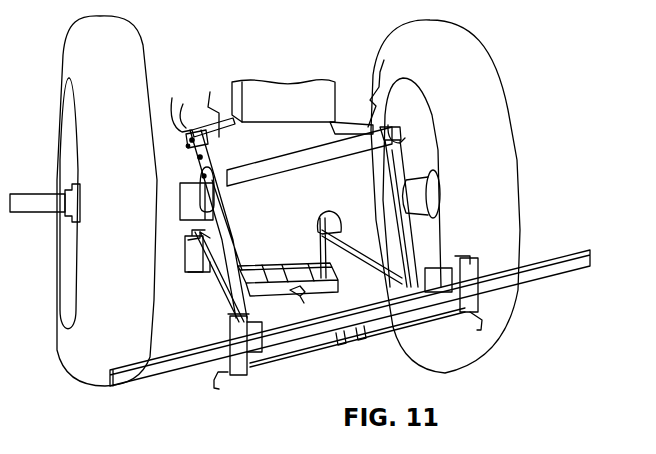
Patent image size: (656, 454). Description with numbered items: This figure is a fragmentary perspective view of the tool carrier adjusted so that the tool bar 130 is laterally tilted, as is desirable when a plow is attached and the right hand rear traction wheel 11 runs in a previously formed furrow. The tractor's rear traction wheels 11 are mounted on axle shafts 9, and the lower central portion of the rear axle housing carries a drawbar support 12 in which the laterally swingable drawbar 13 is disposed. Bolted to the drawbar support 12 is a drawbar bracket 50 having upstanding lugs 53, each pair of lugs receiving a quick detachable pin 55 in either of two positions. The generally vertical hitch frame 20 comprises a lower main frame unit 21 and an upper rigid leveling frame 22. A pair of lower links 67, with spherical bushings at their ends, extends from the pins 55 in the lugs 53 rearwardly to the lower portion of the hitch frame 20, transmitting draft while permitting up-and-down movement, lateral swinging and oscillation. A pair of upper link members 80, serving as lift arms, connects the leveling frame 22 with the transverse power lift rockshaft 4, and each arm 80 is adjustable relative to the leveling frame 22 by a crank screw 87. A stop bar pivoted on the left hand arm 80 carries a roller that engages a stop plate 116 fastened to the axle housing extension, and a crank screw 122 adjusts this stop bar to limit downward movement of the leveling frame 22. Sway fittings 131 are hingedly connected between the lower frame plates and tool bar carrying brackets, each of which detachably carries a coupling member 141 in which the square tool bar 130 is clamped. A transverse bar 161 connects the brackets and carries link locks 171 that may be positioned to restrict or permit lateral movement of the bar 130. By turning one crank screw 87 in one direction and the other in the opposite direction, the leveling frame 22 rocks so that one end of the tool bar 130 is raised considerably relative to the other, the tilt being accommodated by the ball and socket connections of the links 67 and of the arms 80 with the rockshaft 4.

The power lift rockshaft 4 is at (188, 141).
The axle shaft 9 is at (27, 201).
The rear traction wheel 11 is at (75, 57).
The drawbar support 12 is at (322, 296).
The drawbar 13 is at (296, 300).
The hitch frame 20 is at (424, 235).
The lower main frame unit 21 is at (412, 182).
The leveling frame 22 is at (304, 150).
The drawbar bracket 50 is at (190, 280).
The upstanding lug 53 is at (192, 234).
The quick detachable pin 55 is at (200, 178).
The lower link 67 is at (220, 288).
The upper link member 80 is at (222, 148).
The crank screw 87 is at (209, 100).
The stop plate 116 is at (190, 198).
The crank screw 122 is at (178, 112).
The tool bar 130 is at (549, 254).
The sway fitting 131 is at (260, 345).
The coupling member 141 is at (228, 346).
The transverse bar 161 is at (432, 318).
The link lock 171 is at (347, 347).